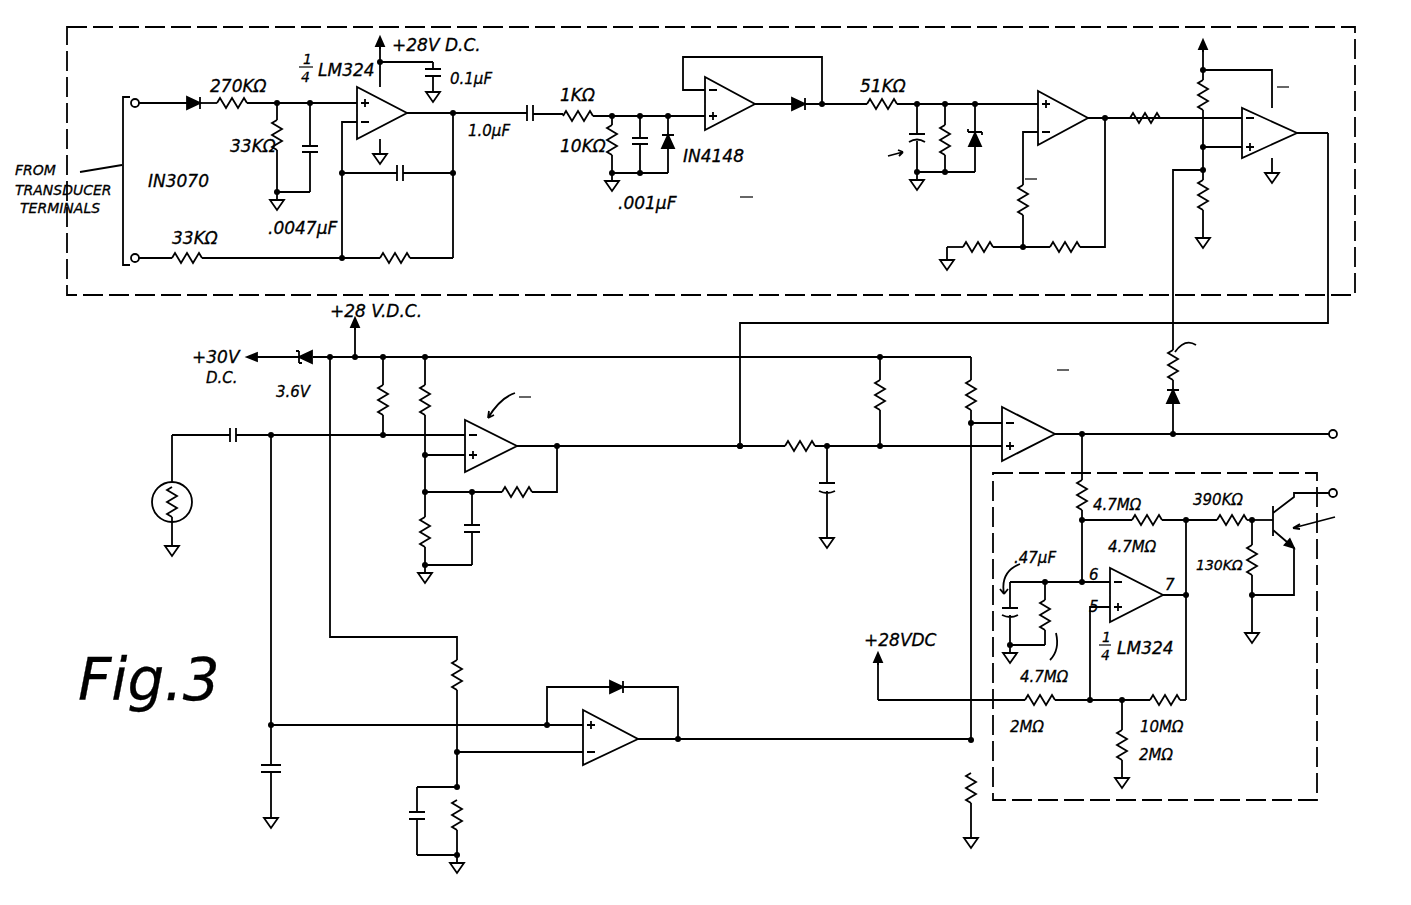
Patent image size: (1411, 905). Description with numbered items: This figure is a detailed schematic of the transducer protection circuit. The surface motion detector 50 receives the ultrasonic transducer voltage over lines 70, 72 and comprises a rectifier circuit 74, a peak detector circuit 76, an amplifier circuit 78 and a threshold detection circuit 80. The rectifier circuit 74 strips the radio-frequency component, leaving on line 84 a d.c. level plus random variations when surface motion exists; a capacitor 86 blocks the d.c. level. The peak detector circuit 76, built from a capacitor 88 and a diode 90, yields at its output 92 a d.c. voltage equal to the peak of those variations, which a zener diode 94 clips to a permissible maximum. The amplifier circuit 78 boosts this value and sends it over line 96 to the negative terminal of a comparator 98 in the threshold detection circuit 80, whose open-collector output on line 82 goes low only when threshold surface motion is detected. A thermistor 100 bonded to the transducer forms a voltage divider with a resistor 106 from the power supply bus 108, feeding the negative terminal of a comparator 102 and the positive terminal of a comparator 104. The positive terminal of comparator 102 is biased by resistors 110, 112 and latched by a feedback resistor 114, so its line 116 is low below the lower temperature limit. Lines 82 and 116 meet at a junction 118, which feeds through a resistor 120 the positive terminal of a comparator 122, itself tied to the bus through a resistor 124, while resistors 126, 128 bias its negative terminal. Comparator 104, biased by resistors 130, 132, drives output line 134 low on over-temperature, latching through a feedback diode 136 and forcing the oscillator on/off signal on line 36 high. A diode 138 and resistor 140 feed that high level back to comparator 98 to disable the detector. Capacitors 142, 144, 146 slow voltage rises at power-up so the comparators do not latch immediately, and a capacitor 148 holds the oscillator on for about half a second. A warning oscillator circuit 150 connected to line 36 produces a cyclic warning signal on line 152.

The oscillator on/off signal line 36 is at (1240, 434).
The surface motion detector 50 is at (472, 298).
The transducer input line 70 is at (193, 117).
The transducer input line 72 is at (143, 262).
The rectifier circuit 74 is at (469, 218).
The peak detector circuit 76 is at (869, 175).
The amplifier circuit 78 is at (1062, 85).
The threshold detection circuit 80 is at (1278, 207).
The output line 82 is at (1277, 328).
The rectifier output line 84 is at (483, 115).
The capacitor 86 is at (531, 125).
The capacitor 88 is at (913, 136).
The diode 90 is at (803, 111).
The peak detector output 92 is at (919, 104).
The zener diode 94 is at (978, 150).
The line 96 is at (1148, 127).
The comparator 98 is at (1285, 125).
The thermistor 100 is at (192, 505).
The comparator 102 is at (508, 433).
The comparator 104 is at (612, 757).
The resistor 106 is at (381, 416).
The power supply bus 108 is at (553, 357).
The resistor 110 is at (432, 395).
The resistor 112 is at (410, 545).
The feedback resistor 114 is at (520, 500).
The line 116 is at (613, 446).
The junction 118 is at (740, 452).
The resistor 120 is at (786, 445).
The comparator 122 is at (1034, 412).
The resistor 124 is at (886, 407).
The resistor 126 is at (976, 387).
The resistor 128 is at (963, 778).
The resistor 130 is at (473, 669).
The resistor 132 is at (462, 808).
The output line 134 is at (695, 739).
The feedback diode 136 is at (617, 678).
The diode 138 is at (1181, 399).
The resistor 140 is at (1181, 363).
The capacitor 142 is at (281, 768).
The capacitor 144 is at (478, 537).
The capacitor 146 is at (409, 832).
The capacitor 148 is at (835, 486).
The warning oscillator circuit 150 is at (1318, 577).
The output line 152 is at (1322, 492).